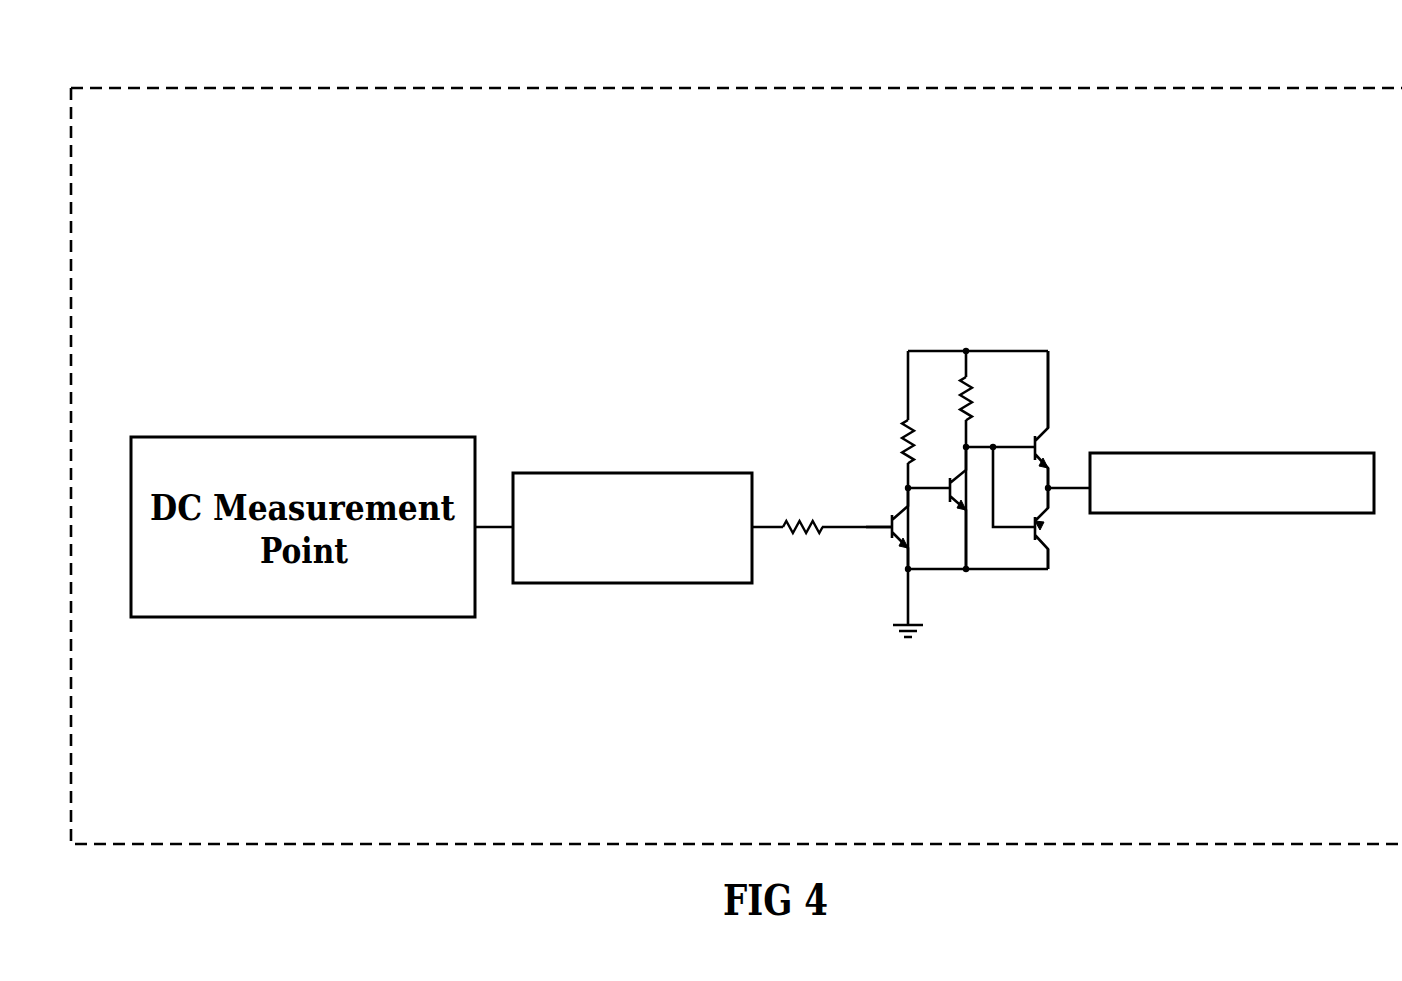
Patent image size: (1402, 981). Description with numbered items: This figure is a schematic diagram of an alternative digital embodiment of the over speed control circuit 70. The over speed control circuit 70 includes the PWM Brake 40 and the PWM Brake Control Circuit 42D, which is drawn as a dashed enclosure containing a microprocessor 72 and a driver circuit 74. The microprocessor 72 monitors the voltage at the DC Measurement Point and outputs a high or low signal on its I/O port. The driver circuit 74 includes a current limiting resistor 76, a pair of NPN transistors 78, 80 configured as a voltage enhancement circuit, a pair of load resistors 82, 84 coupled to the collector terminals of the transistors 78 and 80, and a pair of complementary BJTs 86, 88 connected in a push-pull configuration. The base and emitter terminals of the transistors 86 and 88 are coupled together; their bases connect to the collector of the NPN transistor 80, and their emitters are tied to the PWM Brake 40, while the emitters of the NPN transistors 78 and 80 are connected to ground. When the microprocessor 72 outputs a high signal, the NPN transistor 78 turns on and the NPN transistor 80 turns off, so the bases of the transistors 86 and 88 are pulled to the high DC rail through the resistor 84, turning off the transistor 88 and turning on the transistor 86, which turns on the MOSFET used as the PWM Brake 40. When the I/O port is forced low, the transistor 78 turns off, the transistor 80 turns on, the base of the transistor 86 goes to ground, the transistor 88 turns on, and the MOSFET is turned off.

The PWM Brake Control Circuit 42D is at (788, 82).
The over speed control circuit 70 is at (1006, 420).
The microprocessor 72 is at (598, 466).
The driver circuit 74 is at (790, 373).
The current limiting resistor 76 is at (793, 517).
The NPN transistor 78 is at (882, 537).
The NPN transistor 80 is at (957, 510).
The load resistor 82 is at (898, 437).
The load resistor 84 is at (972, 397).
The transistor 86 is at (1050, 448).
The PNP transistor 88 is at (1057, 532).
The PWM Brake 40 is at (1175, 448).